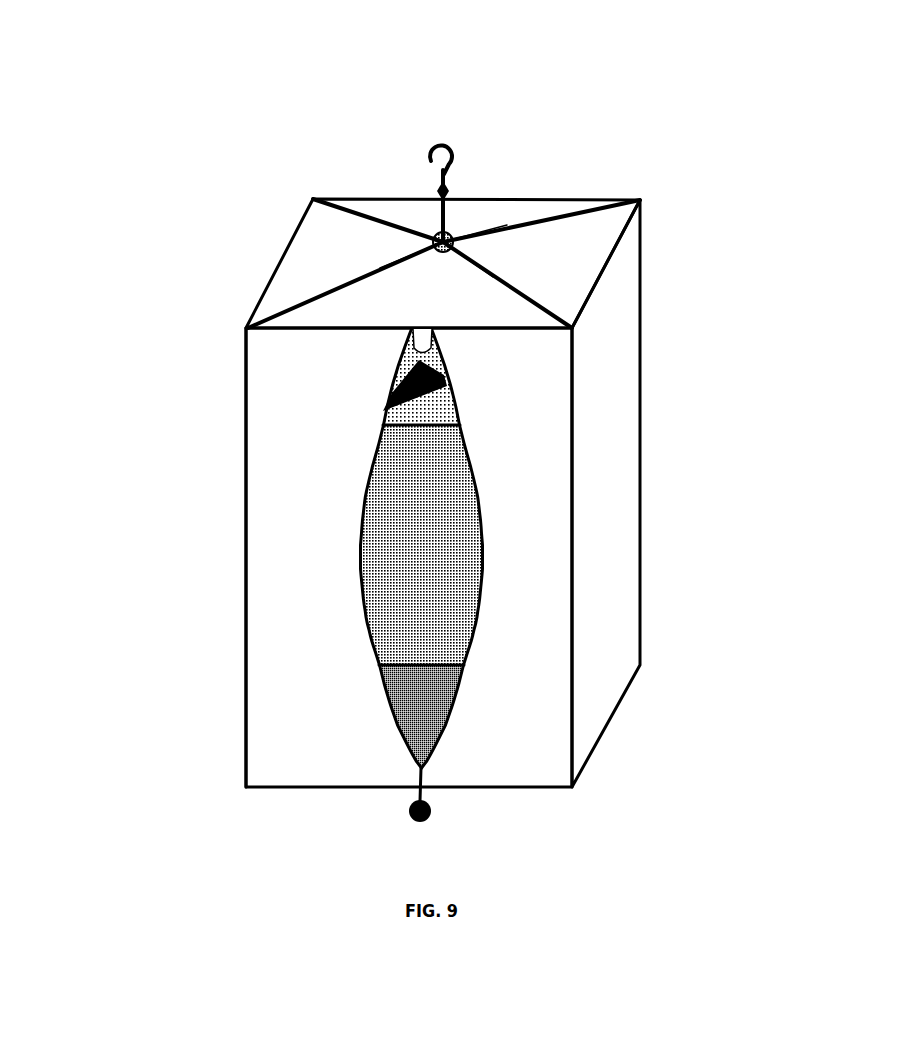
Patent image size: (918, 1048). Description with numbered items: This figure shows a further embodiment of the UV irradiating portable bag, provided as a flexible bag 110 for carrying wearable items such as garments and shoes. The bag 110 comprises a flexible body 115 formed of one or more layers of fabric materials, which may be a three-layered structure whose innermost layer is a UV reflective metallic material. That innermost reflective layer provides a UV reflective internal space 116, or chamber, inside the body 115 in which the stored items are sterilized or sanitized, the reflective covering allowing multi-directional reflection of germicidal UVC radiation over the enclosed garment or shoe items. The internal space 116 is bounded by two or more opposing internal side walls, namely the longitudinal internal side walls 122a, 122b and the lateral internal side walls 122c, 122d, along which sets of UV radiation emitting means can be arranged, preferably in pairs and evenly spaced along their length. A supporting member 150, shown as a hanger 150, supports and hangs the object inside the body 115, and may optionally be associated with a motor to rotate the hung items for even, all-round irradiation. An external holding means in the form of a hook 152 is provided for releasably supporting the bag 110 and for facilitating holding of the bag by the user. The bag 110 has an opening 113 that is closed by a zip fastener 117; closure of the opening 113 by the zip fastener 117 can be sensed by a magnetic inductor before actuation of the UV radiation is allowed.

The flexible bag 110 is at (200, 207).
The hook 152 is at (446, 146).
The hanger 150 is at (451, 363).
The flexible body 115 is at (608, 370).
The longitudinal internal side wall 122a is at (283, 684).
The longitudinal internal side wall 122b is at (452, 500).
The lateral internal side wall 122c is at (236, 477).
The lateral internal side wall 122d is at (613, 666).
The opening 113 is at (390, 560).
The internal space 116 is at (448, 578).
The zip fastener 117 is at (447, 718).